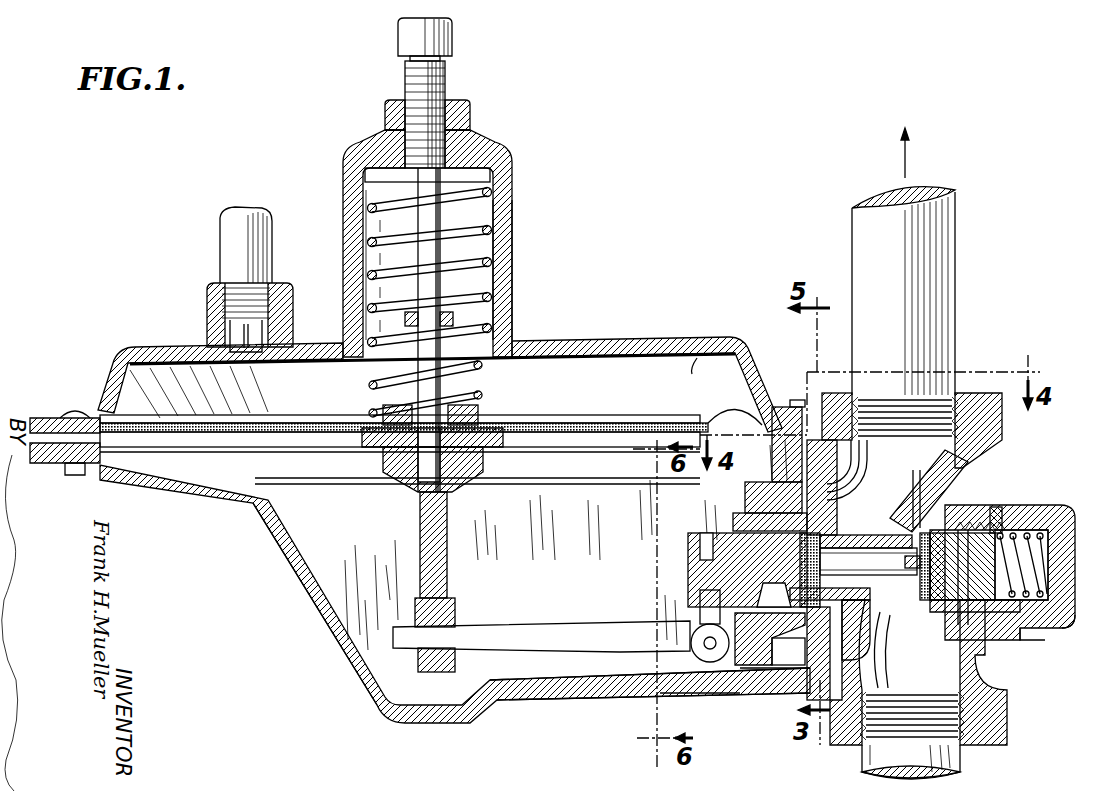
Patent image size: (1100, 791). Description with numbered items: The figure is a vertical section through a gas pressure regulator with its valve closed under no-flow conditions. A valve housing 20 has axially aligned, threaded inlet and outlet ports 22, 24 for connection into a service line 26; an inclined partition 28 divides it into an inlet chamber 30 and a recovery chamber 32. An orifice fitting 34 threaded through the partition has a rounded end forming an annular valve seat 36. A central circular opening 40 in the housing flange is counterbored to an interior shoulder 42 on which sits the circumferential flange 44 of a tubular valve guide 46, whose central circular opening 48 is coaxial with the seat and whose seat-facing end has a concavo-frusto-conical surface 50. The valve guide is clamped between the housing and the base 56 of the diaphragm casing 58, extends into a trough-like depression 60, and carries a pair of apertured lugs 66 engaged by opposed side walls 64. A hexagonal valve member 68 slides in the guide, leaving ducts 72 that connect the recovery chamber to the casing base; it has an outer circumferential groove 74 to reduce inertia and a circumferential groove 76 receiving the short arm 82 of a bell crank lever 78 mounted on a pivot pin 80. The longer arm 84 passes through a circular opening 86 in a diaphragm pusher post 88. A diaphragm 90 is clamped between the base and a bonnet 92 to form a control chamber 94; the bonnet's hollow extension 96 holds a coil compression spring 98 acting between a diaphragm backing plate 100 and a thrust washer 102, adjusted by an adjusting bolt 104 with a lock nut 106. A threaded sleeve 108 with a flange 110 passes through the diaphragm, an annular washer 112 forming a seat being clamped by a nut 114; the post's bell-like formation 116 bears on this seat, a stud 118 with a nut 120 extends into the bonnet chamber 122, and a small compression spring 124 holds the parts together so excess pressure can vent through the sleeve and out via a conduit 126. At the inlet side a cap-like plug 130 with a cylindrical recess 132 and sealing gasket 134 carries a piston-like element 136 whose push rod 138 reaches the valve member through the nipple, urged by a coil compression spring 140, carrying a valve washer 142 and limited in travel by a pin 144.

The valve housing 20 is at (998, 502).
The inlet port 22 is at (870, 742).
The outlet port 24 is at (930, 395).
The service line 26 is at (953, 310).
The inclined transverse partition 28 is at (936, 492).
The inlet chamber 30 is at (950, 672).
The recovery chamber 32 is at (975, 457).
The orifice fitting 34 is at (858, 534).
The annular valve seat 36 is at (823, 578).
The central circular opening 40 is at (842, 503).
The interior shoulder 42 is at (820, 655).
The circumferential flange 44 is at (776, 481).
The tubular valve guide 46 is at (750, 516).
The central circular opening 48 is at (788, 651).
The concavo-frusto-conical surface 50 is at (820, 612).
The base 56 is at (583, 702).
The diaphragm casing 58 is at (307, 600).
The trough-like depression 60 is at (530, 682).
The opposed side walls 64 is at (760, 690).
The apertured lugs 66 is at (715, 688).
The valve member 68 is at (690, 557).
The ducts 72 is at (734, 532).
The outer circumferential groove 74 is at (774, 573).
The circumferential groove 76 is at (712, 533).
The bell crank lever 78 is at (645, 620).
The pivot pin 80 is at (700, 648).
The short arm 82 is at (700, 610).
The longer arm 84 is at (562, 628).
The circular opening 86 is at (456, 657).
The diaphragm pusher post 88 is at (448, 588).
The diaphragm 90 is at (576, 437).
The bonnet 92 is at (639, 344).
The control chamber 94 is at (312, 538).
The hollow extension 96 is at (509, 232).
The coil compression spring 98 is at (492, 288).
The diaphragm backing plate 100 is at (553, 425).
The thrust washer 102 is at (497, 166).
The adjusting bolt 104 is at (447, 80).
The lock nut 106 is at (468, 115).
The exteriorly threaded sleeve 108 is at (484, 412).
The circumferential flange 110 is at (404, 482).
The annular washer 112 is at (485, 447).
The nut 114 is at (376, 408).
The bell-like formation 116 is at (372, 452).
The stud 118 is at (480, 378).
The nut 120 is at (442, 322).
The bonnet chamber 122 is at (712, 350).
The small compression spring 124 is at (263, 326).
The conduit 126 is at (222, 251).
The cap-like plug 130 is at (1052, 626).
The cylindrical recess 132 is at (1015, 622).
The sealing gasket 134 is at (1005, 525).
The piston-like element 136 is at (948, 600).
The push rod 138 is at (935, 668).
The coil compression spring 140 is at (1045, 530).
The valve washer 142 is at (920, 492).
The pin 144 is at (952, 625).